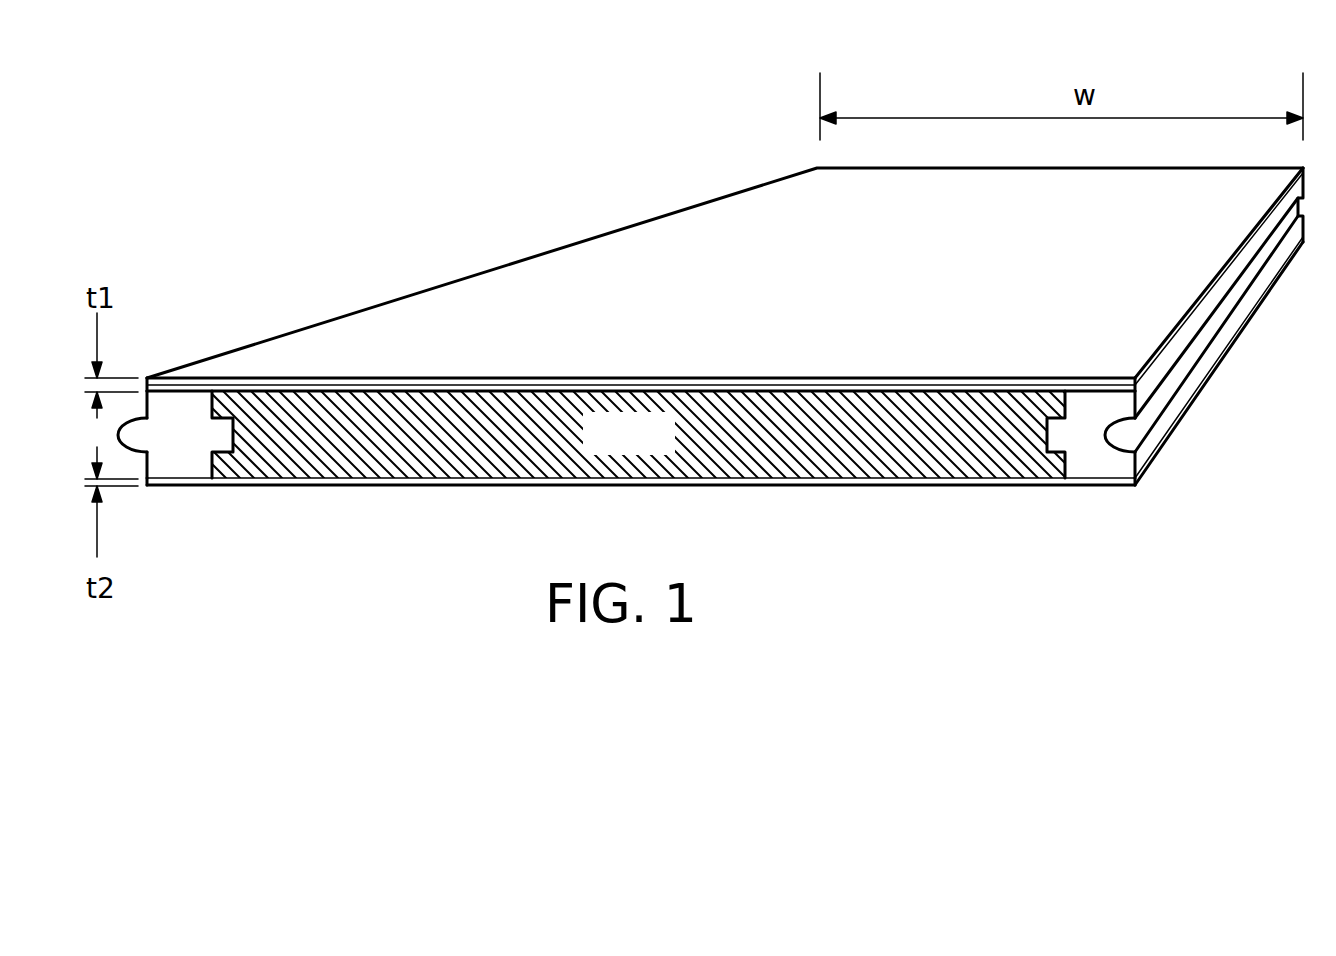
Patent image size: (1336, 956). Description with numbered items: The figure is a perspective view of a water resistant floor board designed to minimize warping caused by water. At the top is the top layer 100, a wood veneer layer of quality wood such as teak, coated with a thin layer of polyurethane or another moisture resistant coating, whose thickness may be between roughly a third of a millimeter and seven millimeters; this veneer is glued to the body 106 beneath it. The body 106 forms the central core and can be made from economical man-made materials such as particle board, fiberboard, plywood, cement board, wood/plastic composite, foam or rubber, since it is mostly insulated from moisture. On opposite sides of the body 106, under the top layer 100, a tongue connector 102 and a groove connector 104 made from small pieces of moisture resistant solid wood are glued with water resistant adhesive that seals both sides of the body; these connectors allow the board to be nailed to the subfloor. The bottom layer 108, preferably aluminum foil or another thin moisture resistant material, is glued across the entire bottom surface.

The top layer 100 is at (829, 293).
The tongue connector 102 is at (209, 450).
The groove connector 104 is at (1108, 468).
The body 106 is at (656, 447).
The bottom layer 108 is at (777, 486).